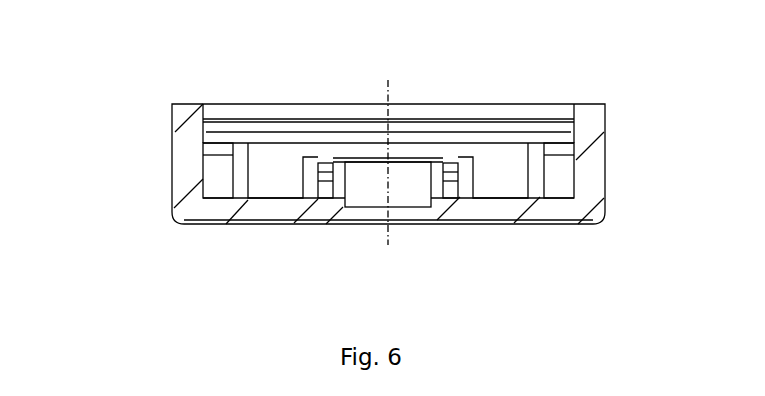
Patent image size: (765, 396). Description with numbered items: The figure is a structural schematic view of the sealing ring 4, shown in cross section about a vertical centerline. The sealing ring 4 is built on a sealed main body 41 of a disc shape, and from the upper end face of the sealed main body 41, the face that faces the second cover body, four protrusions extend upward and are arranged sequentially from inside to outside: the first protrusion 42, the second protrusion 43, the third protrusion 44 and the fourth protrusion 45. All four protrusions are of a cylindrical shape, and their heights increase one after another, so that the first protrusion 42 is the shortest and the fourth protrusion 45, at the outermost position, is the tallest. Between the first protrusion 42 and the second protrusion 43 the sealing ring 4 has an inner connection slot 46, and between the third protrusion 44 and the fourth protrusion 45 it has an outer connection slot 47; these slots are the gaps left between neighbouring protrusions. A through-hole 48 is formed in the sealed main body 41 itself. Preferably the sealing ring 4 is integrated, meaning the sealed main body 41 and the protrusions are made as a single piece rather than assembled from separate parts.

The sealing ring 4 is at (212, 68).
The sealed main body 41 is at (270, 205).
The first protrusion 42 is at (437, 185).
The second protrusion 43 is at (462, 180).
The third protrusion 44 is at (537, 178).
The fourth protrusion 45 is at (588, 137).
The inner connection slot 46 is at (323, 197).
The outer connection slot 47 is at (215, 183).
The through-hole 48 is at (367, 196).